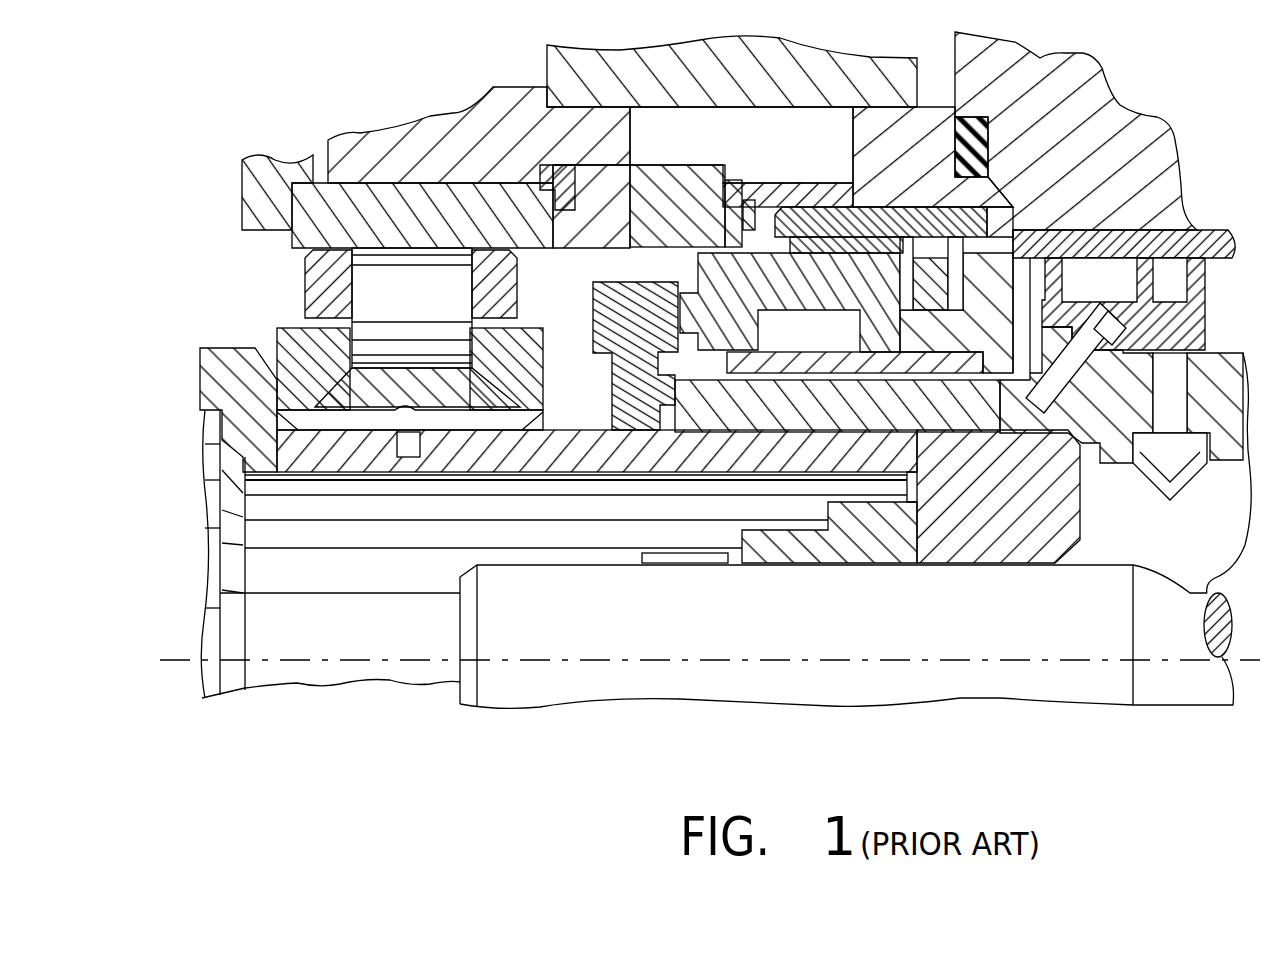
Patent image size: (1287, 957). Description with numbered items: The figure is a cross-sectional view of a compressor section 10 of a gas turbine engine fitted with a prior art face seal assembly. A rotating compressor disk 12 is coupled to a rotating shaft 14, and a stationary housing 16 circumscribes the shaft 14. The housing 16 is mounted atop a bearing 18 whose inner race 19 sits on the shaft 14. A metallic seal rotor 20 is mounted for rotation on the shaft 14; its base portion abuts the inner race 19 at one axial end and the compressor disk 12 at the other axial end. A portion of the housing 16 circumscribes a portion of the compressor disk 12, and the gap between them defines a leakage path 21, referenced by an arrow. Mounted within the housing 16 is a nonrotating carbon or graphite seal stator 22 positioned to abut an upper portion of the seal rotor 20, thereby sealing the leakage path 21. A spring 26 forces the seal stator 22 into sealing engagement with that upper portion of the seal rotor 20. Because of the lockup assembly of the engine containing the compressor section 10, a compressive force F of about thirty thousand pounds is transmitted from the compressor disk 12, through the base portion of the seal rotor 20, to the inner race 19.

The compressor section 10 is at (235, 740).
The compressor disk 12 is at (848, 415).
The shaft 14 is at (1055, 495).
The housing 16 is at (940, 88).
The bearing 18 is at (318, 277).
The inner race 19 is at (298, 345).
The seal rotor 20 is at (607, 312).
The leakage path 21 is at (1025, 345).
The seal stator 22 is at (782, 293).
The spring 26 is at (972, 297).
The compressive force F is at (690, 398).